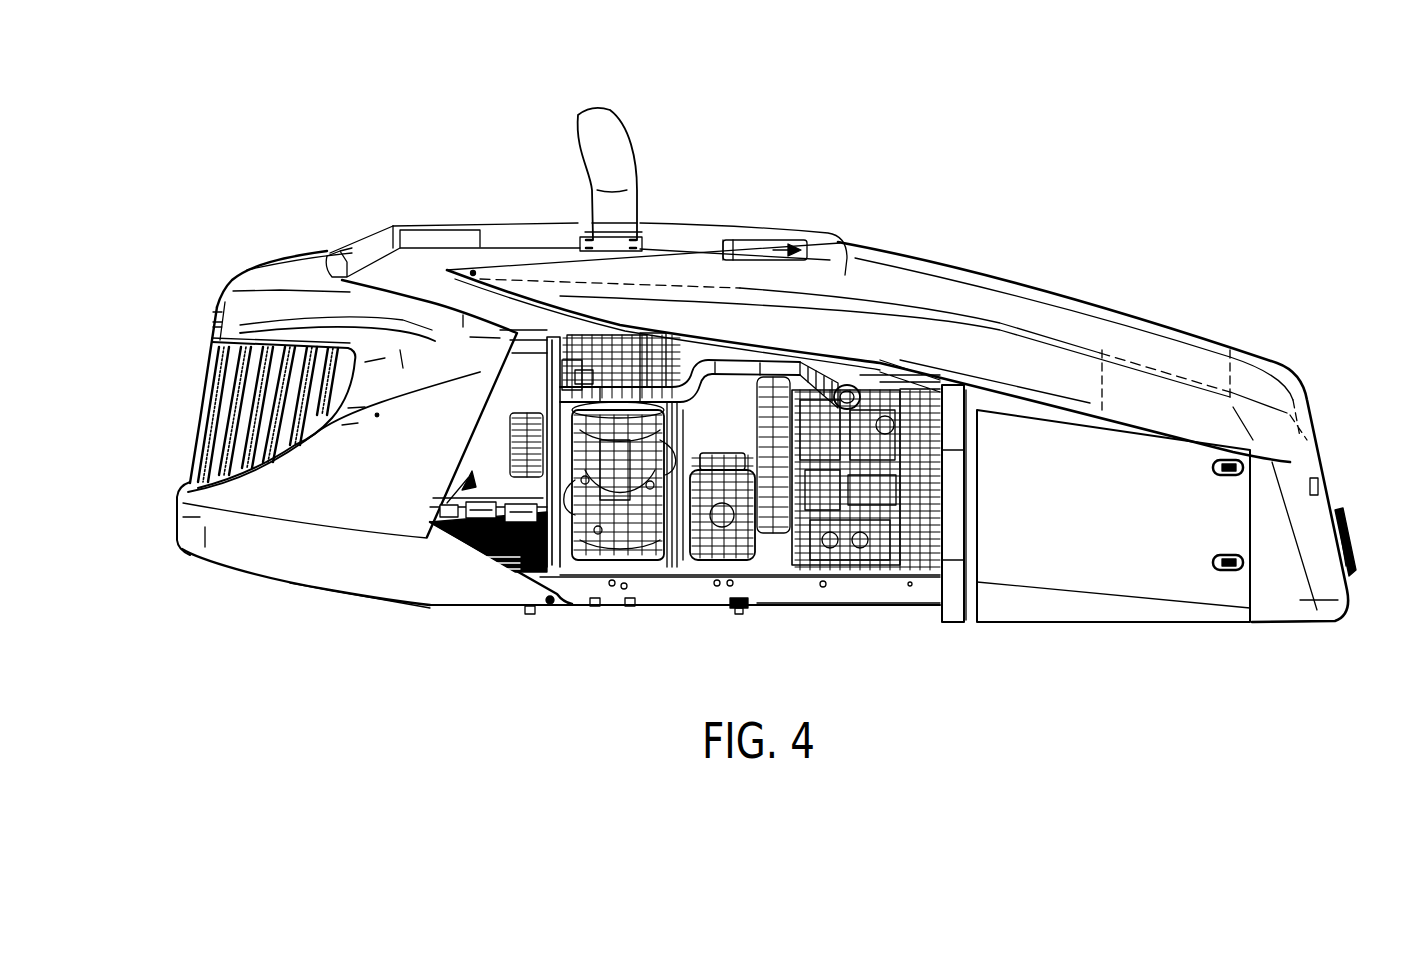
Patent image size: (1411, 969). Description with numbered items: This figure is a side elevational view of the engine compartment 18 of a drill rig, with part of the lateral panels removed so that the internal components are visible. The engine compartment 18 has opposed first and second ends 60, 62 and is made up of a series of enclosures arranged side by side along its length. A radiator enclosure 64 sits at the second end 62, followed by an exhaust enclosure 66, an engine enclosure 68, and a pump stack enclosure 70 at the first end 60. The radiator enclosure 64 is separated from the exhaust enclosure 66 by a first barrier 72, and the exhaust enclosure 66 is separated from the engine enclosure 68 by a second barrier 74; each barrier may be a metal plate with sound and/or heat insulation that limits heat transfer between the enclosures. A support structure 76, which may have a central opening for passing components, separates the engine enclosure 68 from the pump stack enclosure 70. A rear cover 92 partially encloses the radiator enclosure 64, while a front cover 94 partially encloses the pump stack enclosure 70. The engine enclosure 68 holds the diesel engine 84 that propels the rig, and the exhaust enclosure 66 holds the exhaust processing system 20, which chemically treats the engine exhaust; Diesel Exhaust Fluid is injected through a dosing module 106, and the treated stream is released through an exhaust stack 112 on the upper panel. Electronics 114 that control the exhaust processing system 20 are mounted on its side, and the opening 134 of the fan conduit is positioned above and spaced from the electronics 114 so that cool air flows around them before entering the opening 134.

The engine compartment 18 is at (983, 205).
The exhaust processing system 20 is at (640, 342).
The first end 60 is at (1330, 607).
The second end 62 is at (177, 523).
The radiator enclosure 64 is at (430, 537).
The exhaust enclosure 66 is at (678, 340).
The engine enclosure 68 is at (766, 530).
The pump stack enclosure 70 is at (1057, 565).
The first barrier 72 is at (503, 563).
The second barrier 74 is at (708, 340).
The support structure 76 is at (947, 423).
The engine 84 is at (845, 535).
The rear cover 92 is at (250, 550).
The front cover 94 is at (1317, 463).
The dosing module 106 is at (642, 530).
The exhaust stack 112 is at (613, 118).
The electronics 114 is at (582, 565).
The opening 134 is at (585, 375).